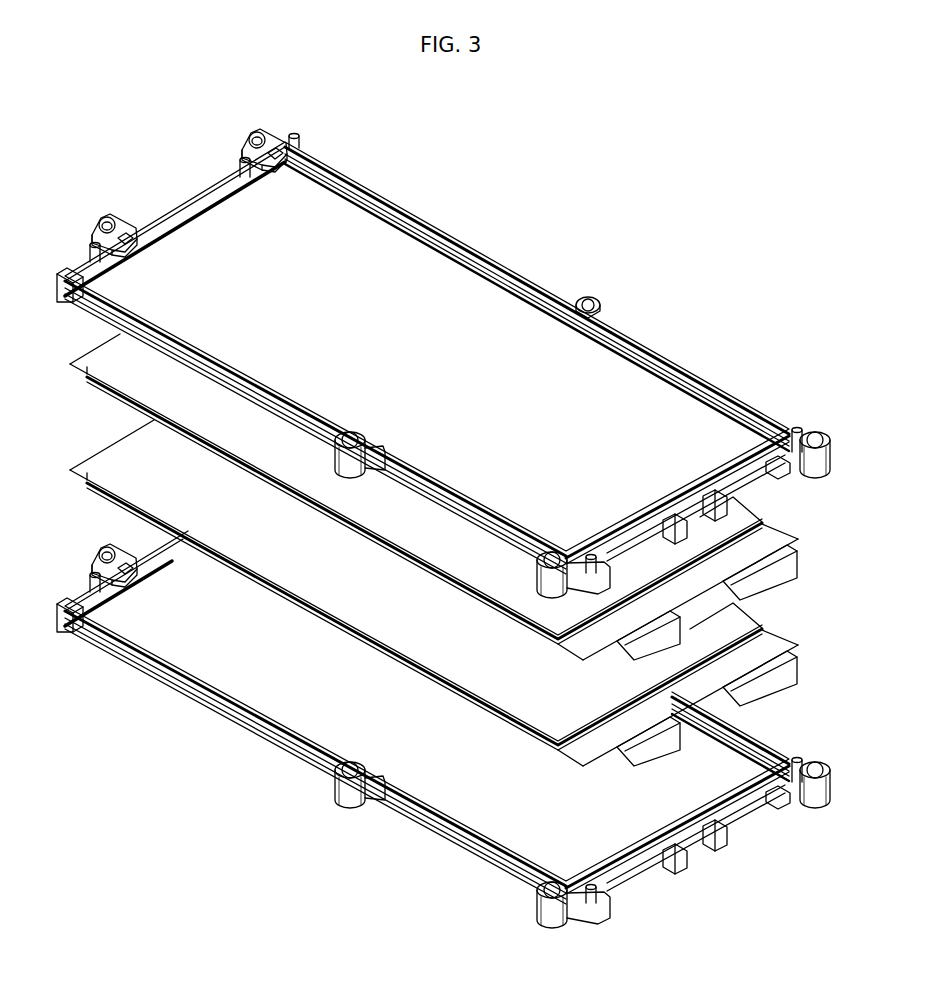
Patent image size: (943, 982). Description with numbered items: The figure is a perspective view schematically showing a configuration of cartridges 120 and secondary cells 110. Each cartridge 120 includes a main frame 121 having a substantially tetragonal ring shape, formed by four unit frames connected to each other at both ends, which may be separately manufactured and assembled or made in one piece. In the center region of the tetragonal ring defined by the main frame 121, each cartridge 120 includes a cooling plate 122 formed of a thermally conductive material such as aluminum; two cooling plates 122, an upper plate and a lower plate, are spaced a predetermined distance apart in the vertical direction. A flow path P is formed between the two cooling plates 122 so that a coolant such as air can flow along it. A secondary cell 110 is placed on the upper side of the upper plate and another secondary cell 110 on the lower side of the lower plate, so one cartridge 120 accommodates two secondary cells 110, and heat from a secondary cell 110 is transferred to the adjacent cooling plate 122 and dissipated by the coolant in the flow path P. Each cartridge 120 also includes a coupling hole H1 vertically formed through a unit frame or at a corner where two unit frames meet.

The secondary cell 110 is at (150, 453).
The cartridge 120 is at (516, 178).
The main frame 121 is at (438, 223).
The cooling plate 122 is at (487, 290).
The coupling hole H1 is at (254, 132).
The flow path P is at (215, 384).